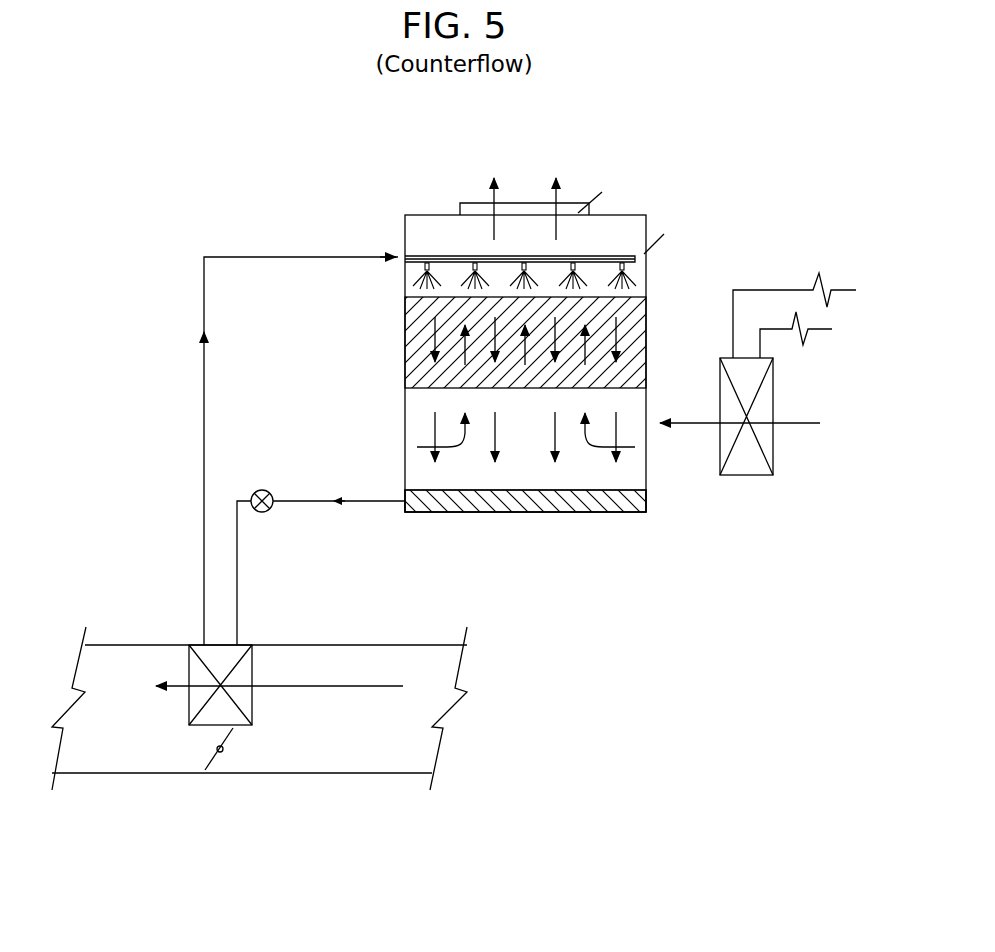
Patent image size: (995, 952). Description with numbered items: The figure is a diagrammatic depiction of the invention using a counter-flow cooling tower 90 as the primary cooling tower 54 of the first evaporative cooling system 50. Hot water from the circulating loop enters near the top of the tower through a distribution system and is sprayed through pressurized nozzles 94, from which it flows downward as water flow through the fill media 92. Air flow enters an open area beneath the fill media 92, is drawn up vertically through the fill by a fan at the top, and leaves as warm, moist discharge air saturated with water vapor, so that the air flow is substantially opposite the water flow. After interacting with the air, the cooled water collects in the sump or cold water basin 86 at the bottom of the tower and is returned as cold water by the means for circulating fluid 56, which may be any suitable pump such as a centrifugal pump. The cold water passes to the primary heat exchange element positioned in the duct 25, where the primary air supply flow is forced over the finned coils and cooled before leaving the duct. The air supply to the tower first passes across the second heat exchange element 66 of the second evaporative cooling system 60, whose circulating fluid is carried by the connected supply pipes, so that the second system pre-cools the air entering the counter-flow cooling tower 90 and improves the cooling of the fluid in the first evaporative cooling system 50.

The duct 25 is at (308, 645).
The first evaporative cooling system 50 is at (241, 243).
The primary cooling tower 54 is at (539, 522).
The means for circulating fluid 56 is at (270, 512).
The second evaporative cooling system 60 is at (849, 276).
The second heat exchange element 66 is at (755, 477).
The cold water basin 86 is at (612, 508).
The counter-flow cooling tower 90 is at (668, 188).
The fill media 92 is at (644, 340).
The pressurized nozzles 94 is at (648, 272).